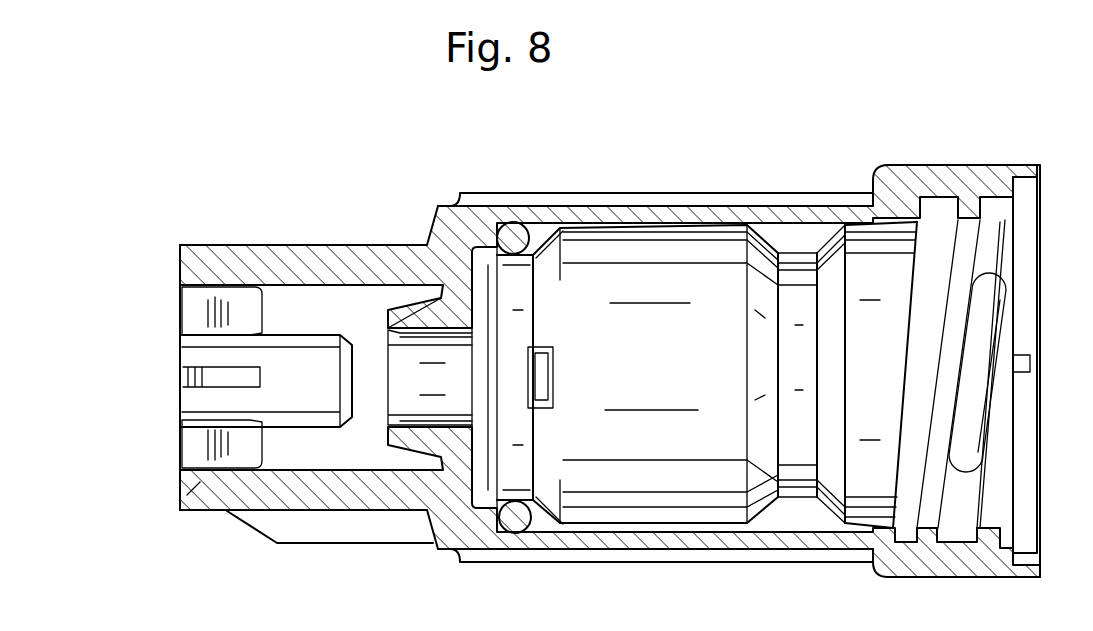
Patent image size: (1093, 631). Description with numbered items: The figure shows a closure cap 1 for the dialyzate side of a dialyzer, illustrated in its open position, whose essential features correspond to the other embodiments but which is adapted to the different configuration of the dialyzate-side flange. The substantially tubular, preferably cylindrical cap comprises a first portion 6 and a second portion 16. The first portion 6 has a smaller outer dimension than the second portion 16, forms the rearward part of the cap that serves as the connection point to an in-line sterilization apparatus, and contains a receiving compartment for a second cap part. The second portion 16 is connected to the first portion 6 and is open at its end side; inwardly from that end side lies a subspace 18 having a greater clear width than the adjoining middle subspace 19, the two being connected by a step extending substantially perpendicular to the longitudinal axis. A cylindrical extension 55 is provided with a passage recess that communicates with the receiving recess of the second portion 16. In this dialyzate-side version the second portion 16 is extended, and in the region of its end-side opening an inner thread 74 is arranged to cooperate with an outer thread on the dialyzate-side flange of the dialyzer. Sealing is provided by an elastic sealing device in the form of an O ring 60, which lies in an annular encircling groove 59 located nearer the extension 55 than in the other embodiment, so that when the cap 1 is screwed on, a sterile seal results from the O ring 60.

The closure cap 1 is at (679, 178).
The first portion 6 is at (190, 493).
The second portion 16 is at (759, 207).
The subspace 18 is at (865, 282).
The middle subspace 19 is at (610, 267).
The cylindrical extension 55 is at (408, 317).
The annular encircling groove 59 is at (496, 222).
The O ring 60 is at (513, 222).
The inner thread 74 is at (1013, 218).